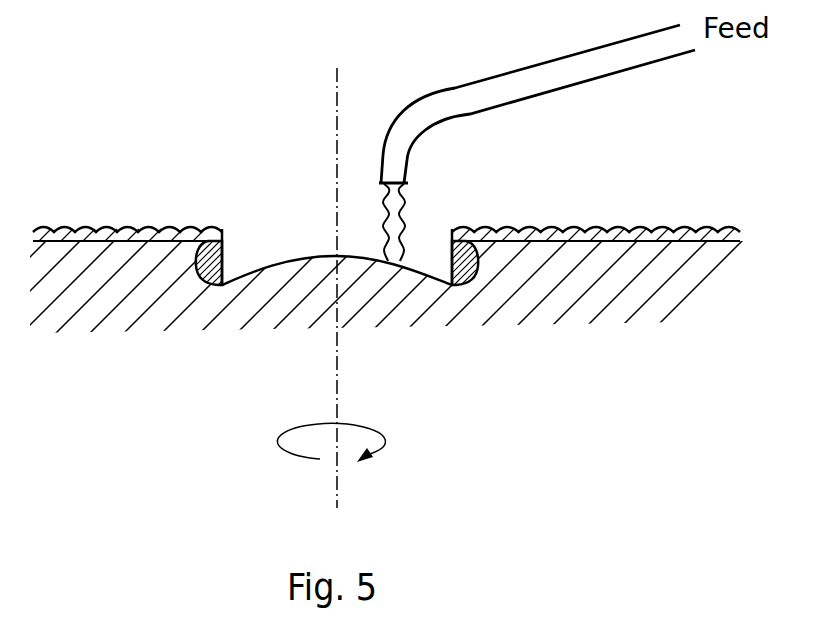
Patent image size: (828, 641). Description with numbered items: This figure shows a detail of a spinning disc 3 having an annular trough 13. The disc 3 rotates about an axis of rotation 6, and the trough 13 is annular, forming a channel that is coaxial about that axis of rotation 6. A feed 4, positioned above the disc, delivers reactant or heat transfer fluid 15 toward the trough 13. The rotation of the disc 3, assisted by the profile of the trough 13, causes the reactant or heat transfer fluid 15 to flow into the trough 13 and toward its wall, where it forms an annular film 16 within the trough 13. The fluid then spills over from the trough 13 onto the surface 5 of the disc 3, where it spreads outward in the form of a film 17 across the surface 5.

The disc 3 is at (648, 241).
The feed nozzle 4 is at (530, 98).
The surface 5 is at (562, 268).
The axis of rotation 6 is at (333, 458).
The trough 13 is at (253, 263).
The reactant or heat transfer fluid 15 is at (410, 248).
The annular film 16 is at (205, 265).
The film 17 is at (670, 240).